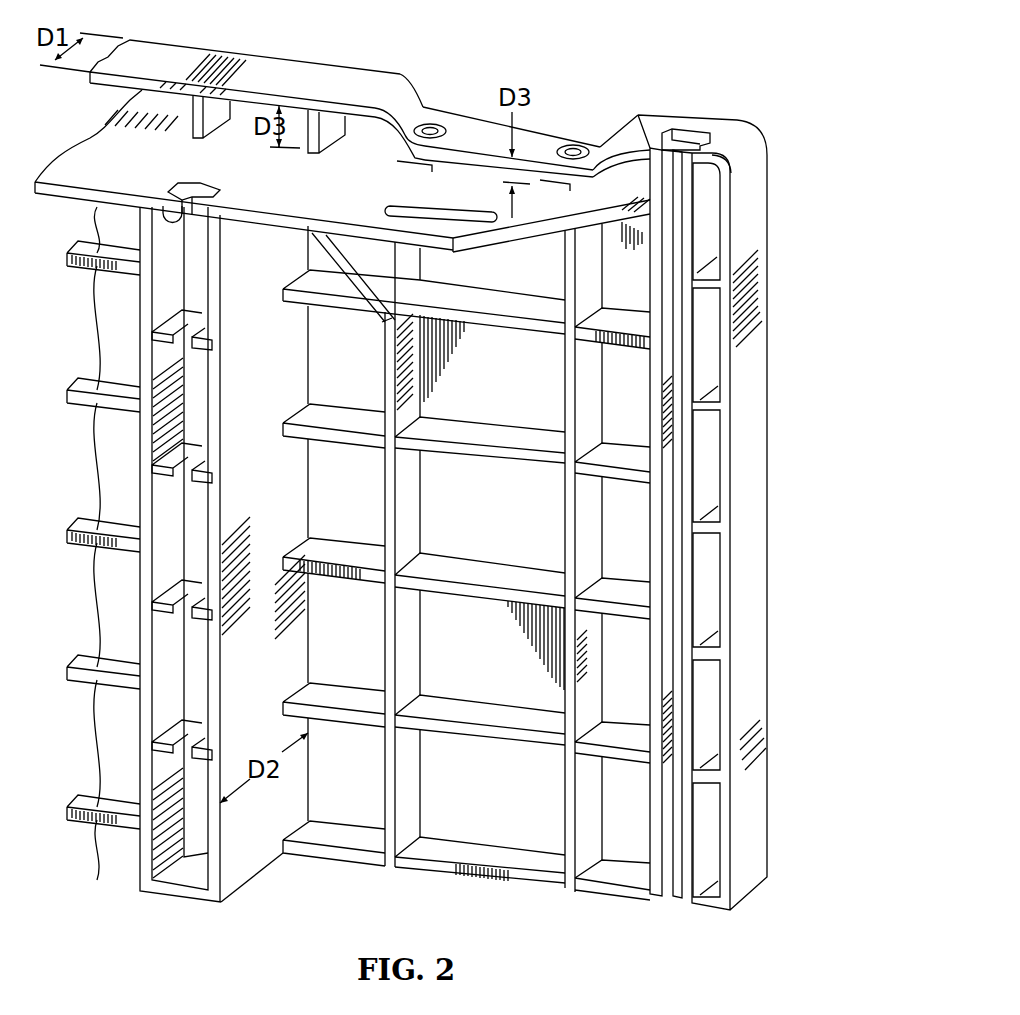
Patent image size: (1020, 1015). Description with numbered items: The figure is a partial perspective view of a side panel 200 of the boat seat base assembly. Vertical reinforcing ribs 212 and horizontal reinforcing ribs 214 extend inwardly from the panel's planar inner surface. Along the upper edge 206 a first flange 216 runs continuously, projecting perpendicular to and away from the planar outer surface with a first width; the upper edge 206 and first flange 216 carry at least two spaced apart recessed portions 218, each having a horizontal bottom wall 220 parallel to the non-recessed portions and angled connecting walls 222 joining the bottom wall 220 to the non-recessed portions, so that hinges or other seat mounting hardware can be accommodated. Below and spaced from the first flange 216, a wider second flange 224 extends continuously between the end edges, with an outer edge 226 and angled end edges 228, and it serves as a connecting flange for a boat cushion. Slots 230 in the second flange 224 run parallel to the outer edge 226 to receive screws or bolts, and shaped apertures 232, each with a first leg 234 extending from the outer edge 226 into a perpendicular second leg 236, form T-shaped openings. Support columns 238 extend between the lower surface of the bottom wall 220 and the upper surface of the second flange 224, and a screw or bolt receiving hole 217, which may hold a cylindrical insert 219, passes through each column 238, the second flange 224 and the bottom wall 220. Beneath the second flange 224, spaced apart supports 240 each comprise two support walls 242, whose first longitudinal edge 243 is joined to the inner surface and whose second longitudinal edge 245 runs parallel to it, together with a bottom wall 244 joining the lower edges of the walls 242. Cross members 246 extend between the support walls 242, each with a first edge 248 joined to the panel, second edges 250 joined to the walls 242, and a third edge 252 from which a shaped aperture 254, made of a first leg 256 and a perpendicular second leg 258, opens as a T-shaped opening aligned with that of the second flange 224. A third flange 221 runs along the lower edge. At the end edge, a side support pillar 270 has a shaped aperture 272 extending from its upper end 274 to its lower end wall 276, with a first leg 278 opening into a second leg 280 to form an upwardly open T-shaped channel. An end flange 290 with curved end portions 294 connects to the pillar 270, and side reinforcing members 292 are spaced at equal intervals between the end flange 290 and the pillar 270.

The side panel 200 is at (428, 876).
The upper edge 206 is at (310, 64).
The vertical reinforcing ribs 212 is at (567, 800).
The horizontal reinforcing ribs 214 is at (633, 755).
The first flange 216 is at (174, 50).
The screw or bolt receiving hole 217 is at (430, 122).
The recessed portions 218 is at (482, 118).
The cylindrical insert 219 is at (446, 160).
The horizontal bottom wall 220 is at (503, 125).
The third flange 221 is at (532, 864).
The angled connecting walls 222 is at (392, 80).
The second flange 224 is at (95, 136).
The outer edge 226 is at (294, 214).
The angled end edges 228 is at (500, 234).
The slots 230 is at (392, 204).
The shaped apertures 232 is at (186, 181).
The first leg 234 is at (163, 200).
The second leg 236 is at (210, 189).
The support columns 238 is at (544, 220).
The supports 240 is at (234, 889).
The support walls 242 is at (142, 849).
The first longitudinal edge 243 is at (307, 478).
The bottom wall 244 is at (173, 891).
The second longitudinal edge 245 is at (221, 502).
The cross members 246 is at (170, 603).
The first edge 248 is at (197, 318).
The second edges 250 is at (197, 318).
The third edge 252 is at (233, 309).
The shaped aperture 254 is at (200, 320).
The first leg 256 is at (188, 340).
The second leg 258 is at (196, 322).
The side support pillars 270 is at (762, 152).
The shaped aperture 272 is at (683, 130).
The upper end 274 is at (716, 128).
The lower end wall 276 is at (670, 899).
The first leg 278 is at (660, 168).
The second leg 280 is at (700, 134).
The end flanges 290 is at (763, 307).
The side reinforcing members 292 is at (707, 417).
The curved end portions 294 is at (740, 158).